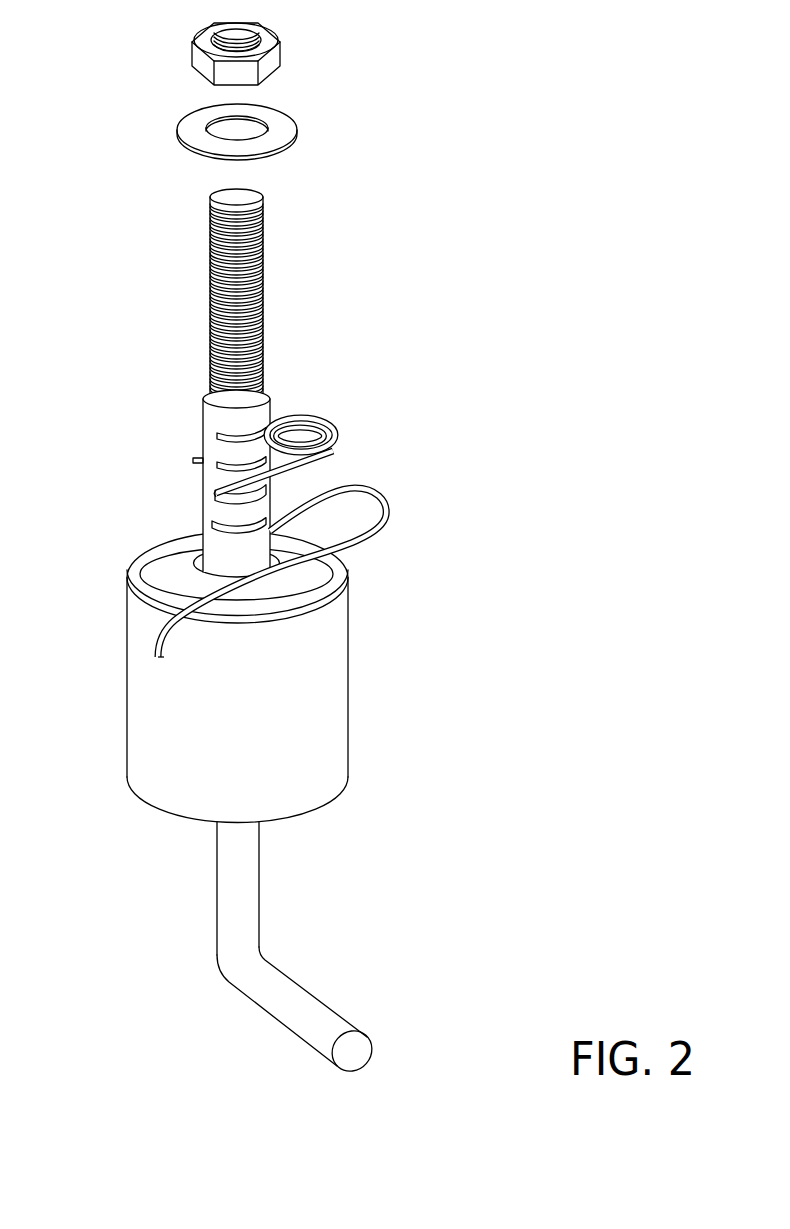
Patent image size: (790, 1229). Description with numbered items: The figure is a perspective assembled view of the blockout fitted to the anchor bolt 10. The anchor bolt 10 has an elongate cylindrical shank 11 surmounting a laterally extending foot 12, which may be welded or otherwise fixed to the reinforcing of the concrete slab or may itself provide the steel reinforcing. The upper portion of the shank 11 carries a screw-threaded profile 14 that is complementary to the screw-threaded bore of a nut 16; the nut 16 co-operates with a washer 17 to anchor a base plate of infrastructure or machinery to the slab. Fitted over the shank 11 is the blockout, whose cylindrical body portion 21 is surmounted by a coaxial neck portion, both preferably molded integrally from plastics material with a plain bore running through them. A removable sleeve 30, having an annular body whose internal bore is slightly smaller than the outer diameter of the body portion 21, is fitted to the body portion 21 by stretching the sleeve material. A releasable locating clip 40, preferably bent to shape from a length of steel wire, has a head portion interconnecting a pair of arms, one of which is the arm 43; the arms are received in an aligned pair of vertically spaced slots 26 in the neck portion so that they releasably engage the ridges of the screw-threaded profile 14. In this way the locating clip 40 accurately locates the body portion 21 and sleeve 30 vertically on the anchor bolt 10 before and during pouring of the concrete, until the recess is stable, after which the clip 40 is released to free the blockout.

The anchor bolt 10 is at (261, 540).
The elongate cylindrical shank 11 is at (260, 888).
The laterally extending foot 12 is at (347, 1017).
The screw-threaded profile 14 is at (263, 295).
The nut 16 is at (282, 54).
The washer 17 is at (298, 132).
The cylindrical body portion 21 is at (203, 432).
The slots 26 is at (223, 532).
The removable sleeve 30 is at (350, 685).
The releasable locating clip 40 is at (340, 450).
The arm 43 is at (279, 463).